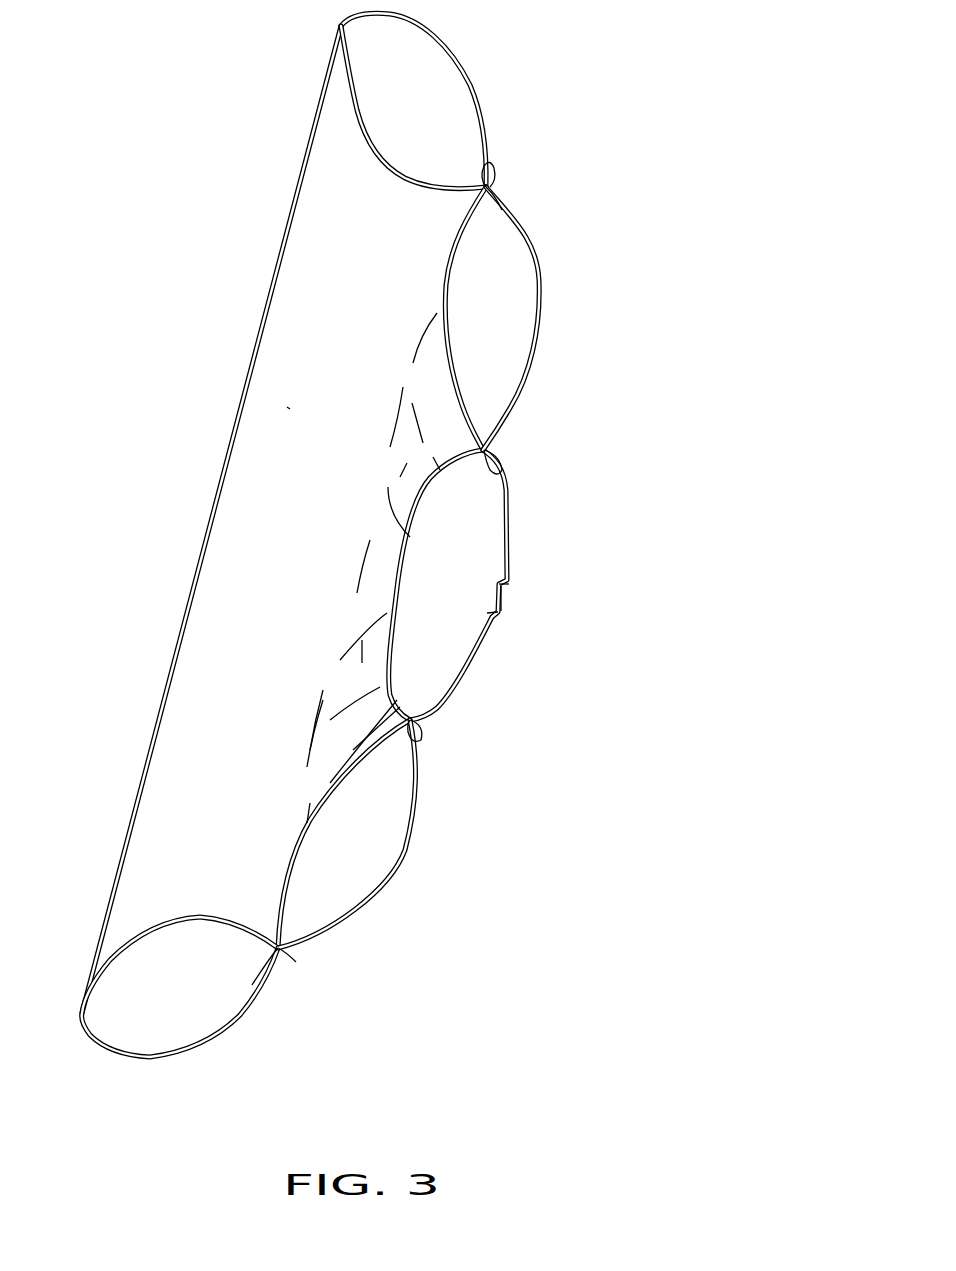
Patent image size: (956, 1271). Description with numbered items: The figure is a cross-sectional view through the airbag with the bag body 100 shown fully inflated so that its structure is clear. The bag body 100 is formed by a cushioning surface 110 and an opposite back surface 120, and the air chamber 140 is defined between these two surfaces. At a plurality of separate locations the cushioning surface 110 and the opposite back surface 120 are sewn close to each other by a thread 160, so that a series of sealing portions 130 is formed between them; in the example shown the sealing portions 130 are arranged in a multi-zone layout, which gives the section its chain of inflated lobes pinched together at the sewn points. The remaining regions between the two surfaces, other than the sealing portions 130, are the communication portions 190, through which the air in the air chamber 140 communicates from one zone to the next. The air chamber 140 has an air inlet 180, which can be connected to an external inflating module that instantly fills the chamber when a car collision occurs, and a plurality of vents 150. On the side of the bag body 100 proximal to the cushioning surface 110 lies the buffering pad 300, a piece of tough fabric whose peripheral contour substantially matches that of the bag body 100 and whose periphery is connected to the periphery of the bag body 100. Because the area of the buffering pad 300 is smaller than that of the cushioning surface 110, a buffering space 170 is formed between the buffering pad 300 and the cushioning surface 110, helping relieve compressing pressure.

The bag body 100 is at (364, 575).
The cushioning surface 110 is at (367, 153).
The opposite back surface 120 is at (489, 104).
The sealing portion 130 is at (498, 166).
The air chamber 140 is at (440, 70).
The vent 150 is at (543, 313).
The thread 160 is at (493, 193).
The buffering space 170 is at (287, 407).
The air inlet 180 is at (503, 586).
The communication portion 190 is at (388, 463).
The buffering pad 300 is at (205, 532).